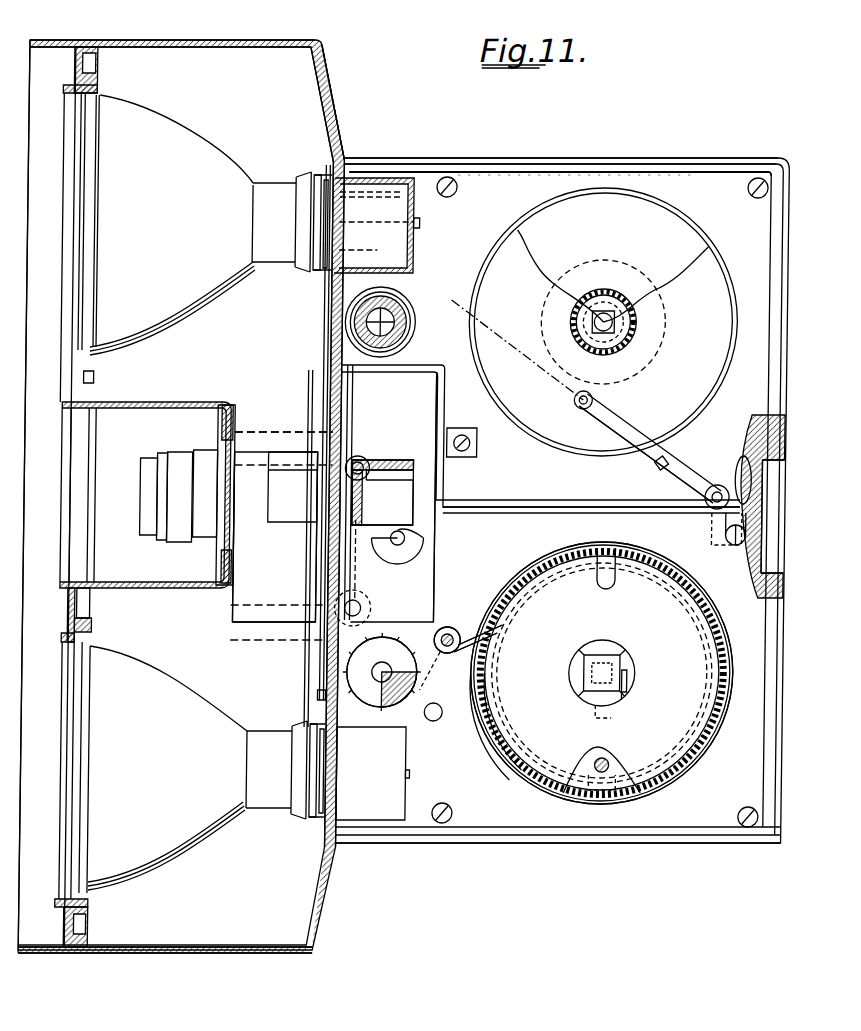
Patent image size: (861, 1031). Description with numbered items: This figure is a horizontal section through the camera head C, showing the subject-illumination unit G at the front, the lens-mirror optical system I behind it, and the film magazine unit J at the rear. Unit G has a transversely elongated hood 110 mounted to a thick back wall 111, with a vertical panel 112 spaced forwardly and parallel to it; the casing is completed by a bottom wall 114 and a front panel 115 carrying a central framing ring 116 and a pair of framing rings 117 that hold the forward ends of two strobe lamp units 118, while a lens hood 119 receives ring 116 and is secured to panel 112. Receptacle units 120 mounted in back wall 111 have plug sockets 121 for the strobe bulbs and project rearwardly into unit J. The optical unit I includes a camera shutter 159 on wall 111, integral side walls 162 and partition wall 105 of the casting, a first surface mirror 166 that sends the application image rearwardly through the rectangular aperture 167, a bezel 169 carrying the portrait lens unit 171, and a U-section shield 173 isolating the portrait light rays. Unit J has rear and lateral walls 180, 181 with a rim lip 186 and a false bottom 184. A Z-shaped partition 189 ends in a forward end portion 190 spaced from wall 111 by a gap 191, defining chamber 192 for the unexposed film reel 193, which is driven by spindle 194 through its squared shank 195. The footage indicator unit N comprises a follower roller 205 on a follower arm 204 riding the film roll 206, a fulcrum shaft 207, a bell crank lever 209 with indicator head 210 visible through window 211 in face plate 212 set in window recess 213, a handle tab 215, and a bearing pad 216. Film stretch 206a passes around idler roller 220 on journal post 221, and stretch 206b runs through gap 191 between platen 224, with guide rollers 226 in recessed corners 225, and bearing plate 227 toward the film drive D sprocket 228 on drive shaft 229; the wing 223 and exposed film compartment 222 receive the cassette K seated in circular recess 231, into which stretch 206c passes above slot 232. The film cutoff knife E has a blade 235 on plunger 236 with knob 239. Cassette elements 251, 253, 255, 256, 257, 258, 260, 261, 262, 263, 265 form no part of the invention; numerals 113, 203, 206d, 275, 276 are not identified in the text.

The hood 110 is at (245, 40).
The back wall 111 is at (335, 126).
The vertical panel 112 is at (230, 412).
The top and bottom walls 113 is at (184, 45).
The bottom wall 114 is at (162, 952).
The front panel 115 is at (76, 608).
The framing ring 116 is at (90, 574).
The framing rings 117 is at (92, 382).
The strobe lamp units 118 is at (190, 318).
The lens hood 119 is at (200, 407).
The receptacle units 120 is at (415, 250).
The plug sockets 121 is at (324, 276).
The camera shutter 159 is at (324, 682).
The side walls 162 is at (238, 629).
The partition wall 105 is at (256, 644).
The first surface mirror 166 is at (275, 548).
The rectangular aperture 167 is at (324, 583).
The bezel 169 is at (212, 455).
The portrait lens unit 171 is at (160, 463).
The shield 173 is at (280, 488).
The rear wall 180 is at (804, 150).
The lateral walls 181 is at (574, 160).
The false bottom 184 is at (520, 150).
The rim lip 186 is at (624, 150).
The partition 189 is at (558, 505).
The forward end portion 190 is at (394, 380).
The gap 191 is at (358, 492).
The chamber 192 is at (577, 200).
The unexposed film reel 193 is at (603, 322).
The spindle 194 is at (610, 309).
The squared shank 195 is at (636, 340).
The latch 203 is at (708, 550).
The follower arm 204 is at (608, 436).
The follower roller 205 is at (580, 404).
The film roll 206 is at (670, 322).
The film stretch 206a is at (476, 324).
The transverse film stretch 206b is at (352, 447).
The film stretch 206c is at (436, 716).
The guide 206d is at (520, 574).
The fulcrum shaft 207 is at (712, 498).
The bell crank lever 209 is at (748, 470).
The footage-indicator head 210 is at (755, 440).
The window 211 is at (770, 503).
The face plate 212 is at (770, 533).
The window recess 213 is at (770, 572).
The handle tab 215 is at (660, 482).
The bearing pad 216 is at (702, 536).
The idler roller 220 is at (408, 308).
The journal post 221 is at (407, 330).
The exposed film compartment 222 is at (591, 530).
The wing 223 is at (393, 497).
The platen 224 is at (410, 536).
The recessed corners 225 is at (383, 492).
The guide rollers 226 is at (372, 482).
The bearing plate 227 is at (328, 408).
The drive sprocket 228 is at (372, 693).
The drive shaft 229 is at (394, 663).
The circular recess 231 is at (522, 784).
The slot 232 is at (470, 658).
The knife blade 235 is at (466, 648).
The plunger 236 is at (456, 634).
The knob 239 is at (446, 626).
The cassette element 251 is at (708, 748).
The cassette element 253 is at (601, 673).
The cassette element 255 is at (498, 766).
The cassette element 256 is at (504, 643).
The cassette element 257 is at (466, 644).
The cassette element 258 is at (514, 704).
The cassette element 260 is at (622, 642).
The cassette element 261 is at (634, 698).
The cassette element 262 is at (634, 688).
The cassette element 263 is at (603, 720).
The cassette element 265 is at (612, 656).
The arch 275 is at (602, 748).
The screw 276 is at (603, 764).
The camera head C is at (347, 90).
The film drive D is at (408, 716).
The film cutoff knife E is at (434, 618).
The subject-illumination unit G is at (170, 970).
The lens-mirror optical system I is at (274, 448).
The film magazine unit J is at (682, 170).
The exposed film cassette K is at (704, 778).
The footage indicator unit N is at (666, 430).